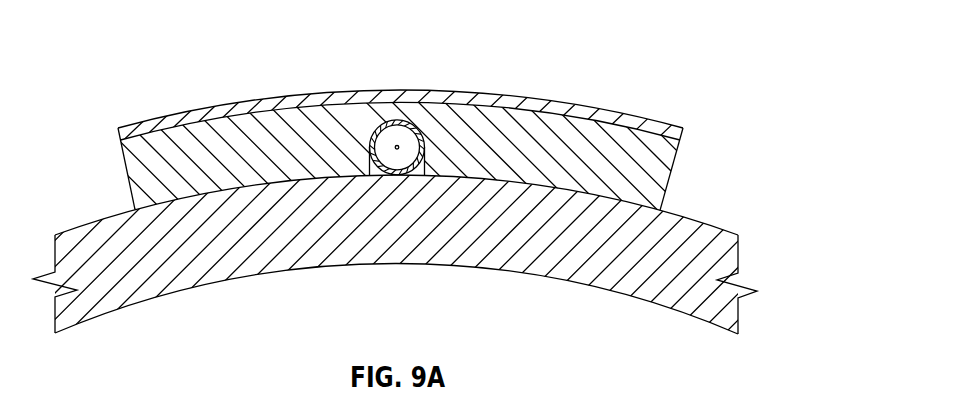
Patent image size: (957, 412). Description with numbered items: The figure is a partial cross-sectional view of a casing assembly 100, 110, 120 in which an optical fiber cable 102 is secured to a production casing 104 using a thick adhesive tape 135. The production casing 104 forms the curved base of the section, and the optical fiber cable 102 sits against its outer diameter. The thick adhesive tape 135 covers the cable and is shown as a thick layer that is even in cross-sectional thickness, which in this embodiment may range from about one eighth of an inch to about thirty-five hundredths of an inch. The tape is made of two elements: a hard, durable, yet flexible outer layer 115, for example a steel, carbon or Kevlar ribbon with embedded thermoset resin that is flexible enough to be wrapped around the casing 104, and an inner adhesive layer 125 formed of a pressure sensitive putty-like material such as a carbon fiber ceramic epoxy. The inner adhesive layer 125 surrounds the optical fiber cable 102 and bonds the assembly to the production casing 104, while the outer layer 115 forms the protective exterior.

The casing assembly 100 is at (459, 178).
The casing assembly 110 is at (459, 178).
The casing assembly 120 is at (459, 178).
The thick adhesive tape 135 is at (407, 127).
The outer layer 115 is at (683, 138).
The inner adhesive layer 125 is at (672, 175).
The optical fiber cable 102 is at (392, 121).
The production casing 104 is at (710, 232).